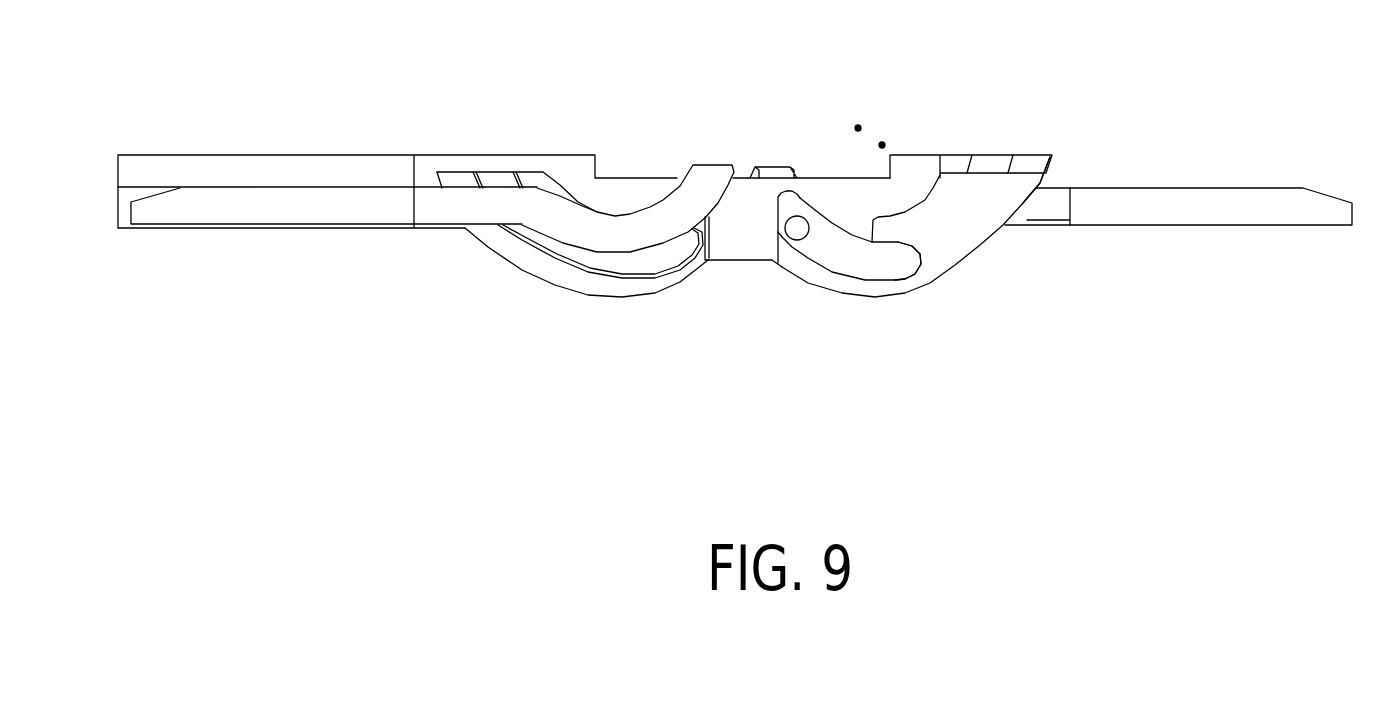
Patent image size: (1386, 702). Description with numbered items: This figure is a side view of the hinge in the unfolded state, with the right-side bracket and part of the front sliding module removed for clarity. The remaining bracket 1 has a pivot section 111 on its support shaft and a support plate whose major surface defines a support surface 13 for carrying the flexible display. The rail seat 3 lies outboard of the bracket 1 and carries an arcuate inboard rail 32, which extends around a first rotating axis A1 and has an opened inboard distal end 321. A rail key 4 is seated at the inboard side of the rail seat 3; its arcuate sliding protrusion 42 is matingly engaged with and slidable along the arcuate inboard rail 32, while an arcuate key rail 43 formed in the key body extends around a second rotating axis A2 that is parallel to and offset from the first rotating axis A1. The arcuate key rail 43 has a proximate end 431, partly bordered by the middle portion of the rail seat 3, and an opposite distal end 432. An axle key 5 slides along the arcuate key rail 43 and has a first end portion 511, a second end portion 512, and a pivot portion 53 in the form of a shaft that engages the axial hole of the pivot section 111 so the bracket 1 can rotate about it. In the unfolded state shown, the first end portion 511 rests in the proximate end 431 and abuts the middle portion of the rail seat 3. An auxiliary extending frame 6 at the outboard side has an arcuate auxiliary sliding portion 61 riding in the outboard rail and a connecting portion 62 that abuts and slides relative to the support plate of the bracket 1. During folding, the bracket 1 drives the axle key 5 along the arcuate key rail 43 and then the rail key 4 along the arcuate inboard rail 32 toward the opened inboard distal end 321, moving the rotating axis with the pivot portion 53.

The bracket 1 is at (192, 165).
The support surface 13 is at (316, 152).
The connecting portion 62 is at (257, 204).
The arcuate auxiliary sliding portion 61 is at (627, 233).
The pivot section 111 is at (650, 192).
The rail key 4 is at (510, 263).
The arcuate sliding protrusion 42 is at (622, 267).
The rail seat 3 is at (735, 243).
The proximate end 431 is at (791, 203).
The first end portion 511 is at (803, 190).
The pivot portion 53 is at (798, 228).
The axle key 5 is at (885, 263).
The second end portion 512 is at (918, 258).
The arcuate key rail 43 is at (975, 220).
The distal end 432 is at (1018, 180).
The arcuate inboard rail 32 is at (987, 168).
The opened inboard distal end 321 is at (1002, 157).
The auxiliary extending frame 6 is at (1228, 205).
The first rotating axis A1 is at (858, 128).
The second rotating axis A2 is at (882, 145).